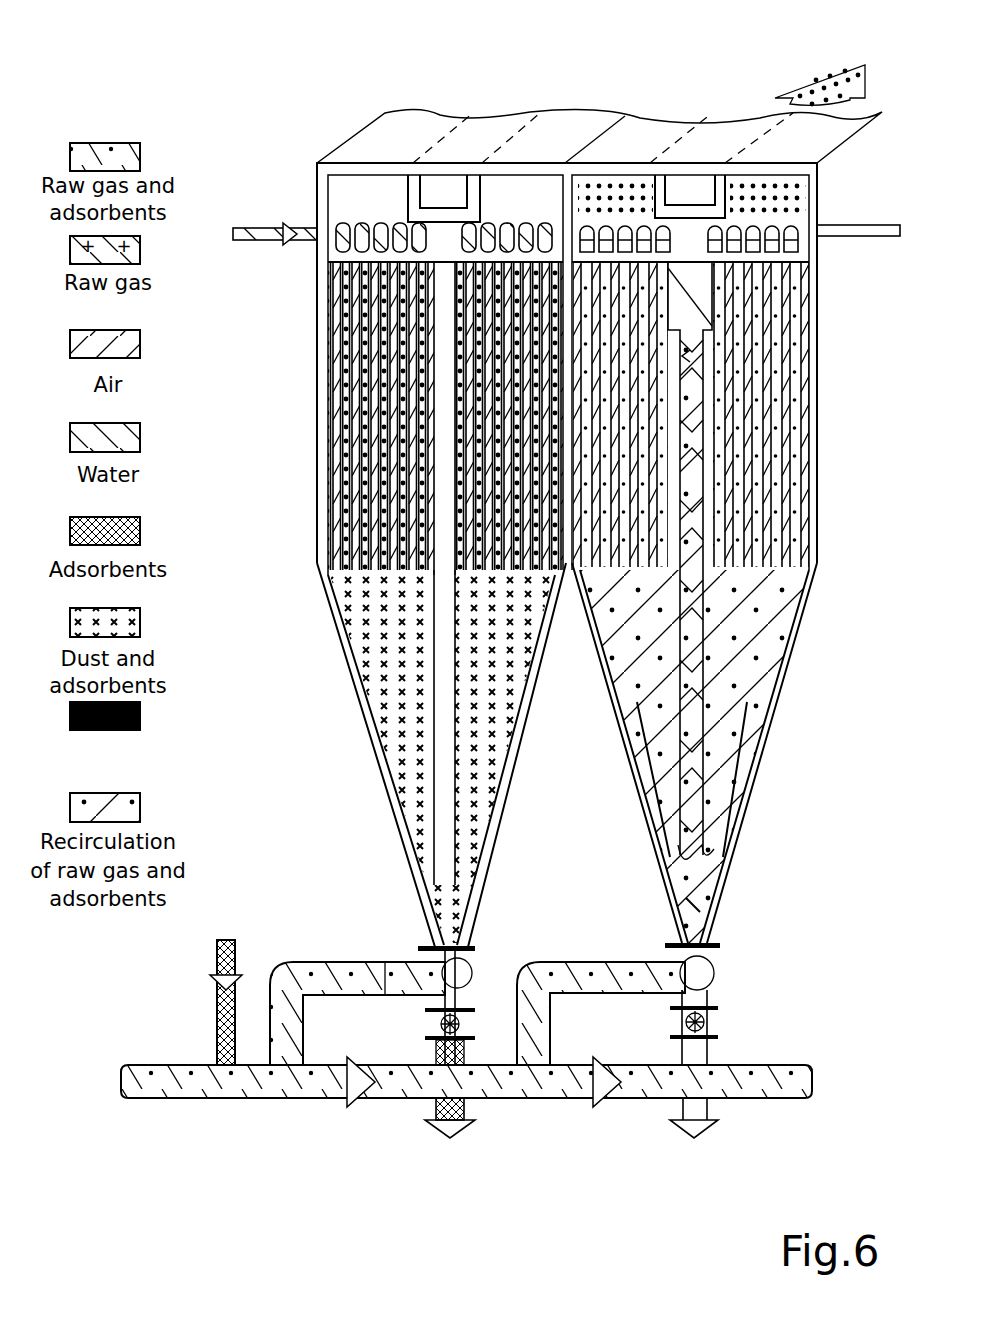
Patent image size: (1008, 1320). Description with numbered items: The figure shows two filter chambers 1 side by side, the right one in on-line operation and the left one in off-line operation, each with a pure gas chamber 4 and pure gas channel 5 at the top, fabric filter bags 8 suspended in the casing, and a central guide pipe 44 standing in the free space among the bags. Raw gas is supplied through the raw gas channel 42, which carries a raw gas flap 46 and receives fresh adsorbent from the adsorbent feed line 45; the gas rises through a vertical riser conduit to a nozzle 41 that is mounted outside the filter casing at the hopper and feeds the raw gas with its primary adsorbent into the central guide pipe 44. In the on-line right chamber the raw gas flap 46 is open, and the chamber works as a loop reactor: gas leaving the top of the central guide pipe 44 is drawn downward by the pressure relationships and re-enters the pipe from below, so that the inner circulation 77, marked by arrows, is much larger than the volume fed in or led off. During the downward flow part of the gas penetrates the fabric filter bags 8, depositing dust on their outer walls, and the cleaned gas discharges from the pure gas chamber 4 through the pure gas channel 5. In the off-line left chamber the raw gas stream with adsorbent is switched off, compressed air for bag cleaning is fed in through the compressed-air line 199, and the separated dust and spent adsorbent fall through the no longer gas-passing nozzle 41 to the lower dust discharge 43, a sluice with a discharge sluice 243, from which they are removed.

The filter chamber 1 is at (300, 402).
The pure gas chamber 4 is at (383, 190).
The pure gas channel 5 is at (446, 190).
The fabric filter bags 8 is at (803, 352).
The central guide pipe 44 is at (705, 632).
The inner circulation 77 is at (740, 745).
The nozzle 41 is at (440, 946).
The raw gas flap 46 is at (378, 965).
The lower dust discharge 43 is at (570, 1006).
The adsorbent feed line 45 is at (215, 958).
The raw gas channel 42 is at (215, 1092).
The discharge sluice 243 is at (458, 1135).
The compressed-air line 199 is at (260, 243).